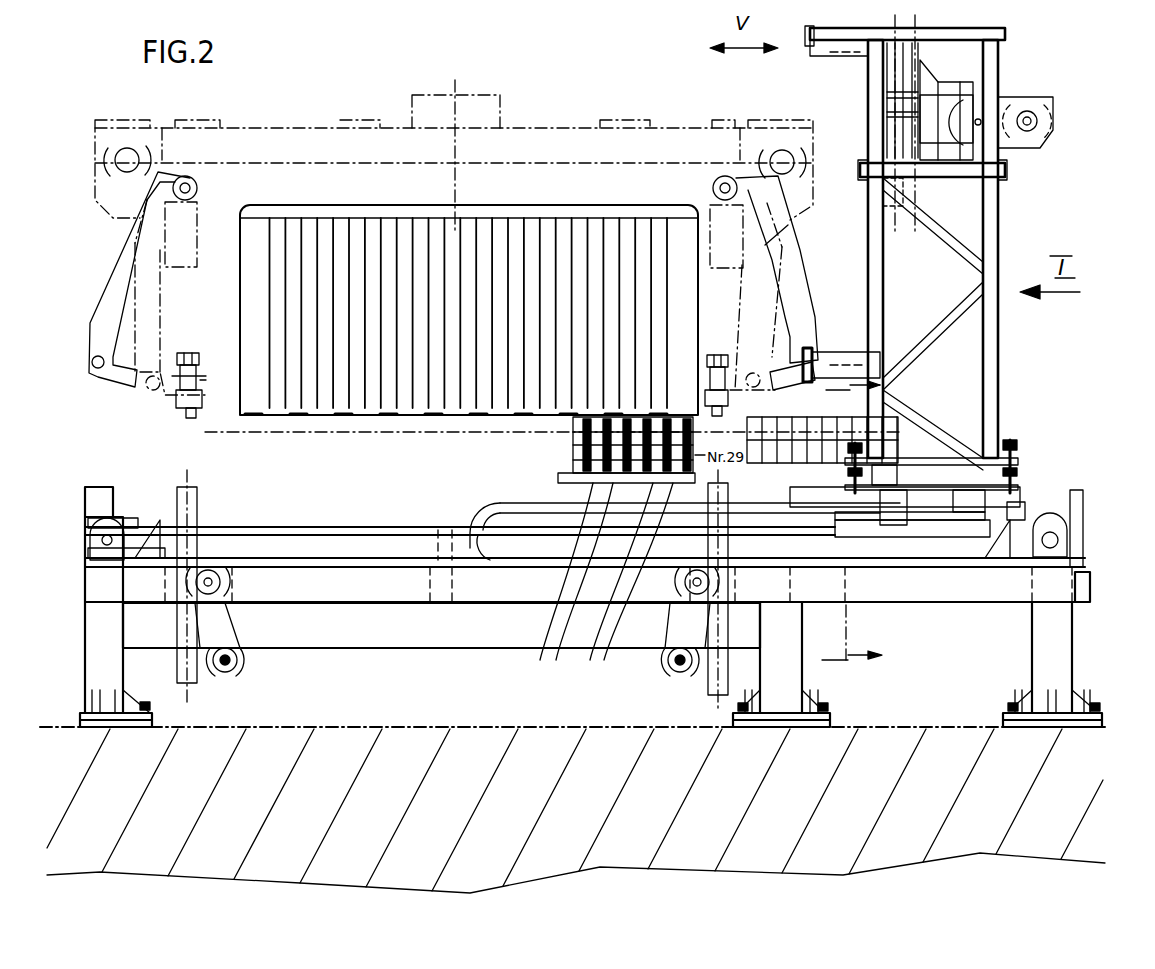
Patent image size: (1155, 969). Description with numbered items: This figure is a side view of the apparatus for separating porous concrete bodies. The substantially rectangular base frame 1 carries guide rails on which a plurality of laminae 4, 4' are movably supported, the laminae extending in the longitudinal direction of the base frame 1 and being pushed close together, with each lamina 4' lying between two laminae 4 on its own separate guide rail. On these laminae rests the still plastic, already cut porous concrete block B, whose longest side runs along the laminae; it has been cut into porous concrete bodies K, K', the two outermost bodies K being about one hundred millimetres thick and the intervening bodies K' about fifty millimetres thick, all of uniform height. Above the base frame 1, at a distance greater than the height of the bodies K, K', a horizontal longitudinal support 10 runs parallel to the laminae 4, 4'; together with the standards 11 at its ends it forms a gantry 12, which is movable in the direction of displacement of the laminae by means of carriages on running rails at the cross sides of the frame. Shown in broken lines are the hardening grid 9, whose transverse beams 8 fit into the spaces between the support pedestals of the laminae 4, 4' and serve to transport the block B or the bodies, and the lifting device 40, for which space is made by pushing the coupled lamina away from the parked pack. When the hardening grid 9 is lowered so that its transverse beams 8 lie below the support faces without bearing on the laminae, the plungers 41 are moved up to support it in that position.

The base frame 1 is at (1088, 572).
The lamina 4 is at (628, 589).
The lamina 4' is at (571, 589).
The transverse beam 8 is at (552, 269).
The hardening grid 9 is at (174, 417).
The longitudinal support 10 is at (975, 30).
The standard 11 is at (996, 365).
The gantry 12 is at (1000, 193).
The lifting device 40 is at (538, 125).
The plunger 41 is at (197, 503).
The porous concrete body K is at (263, 233).
The porous concrete body K' is at (311, 233).
The porous concrete block B is at (518, 205).